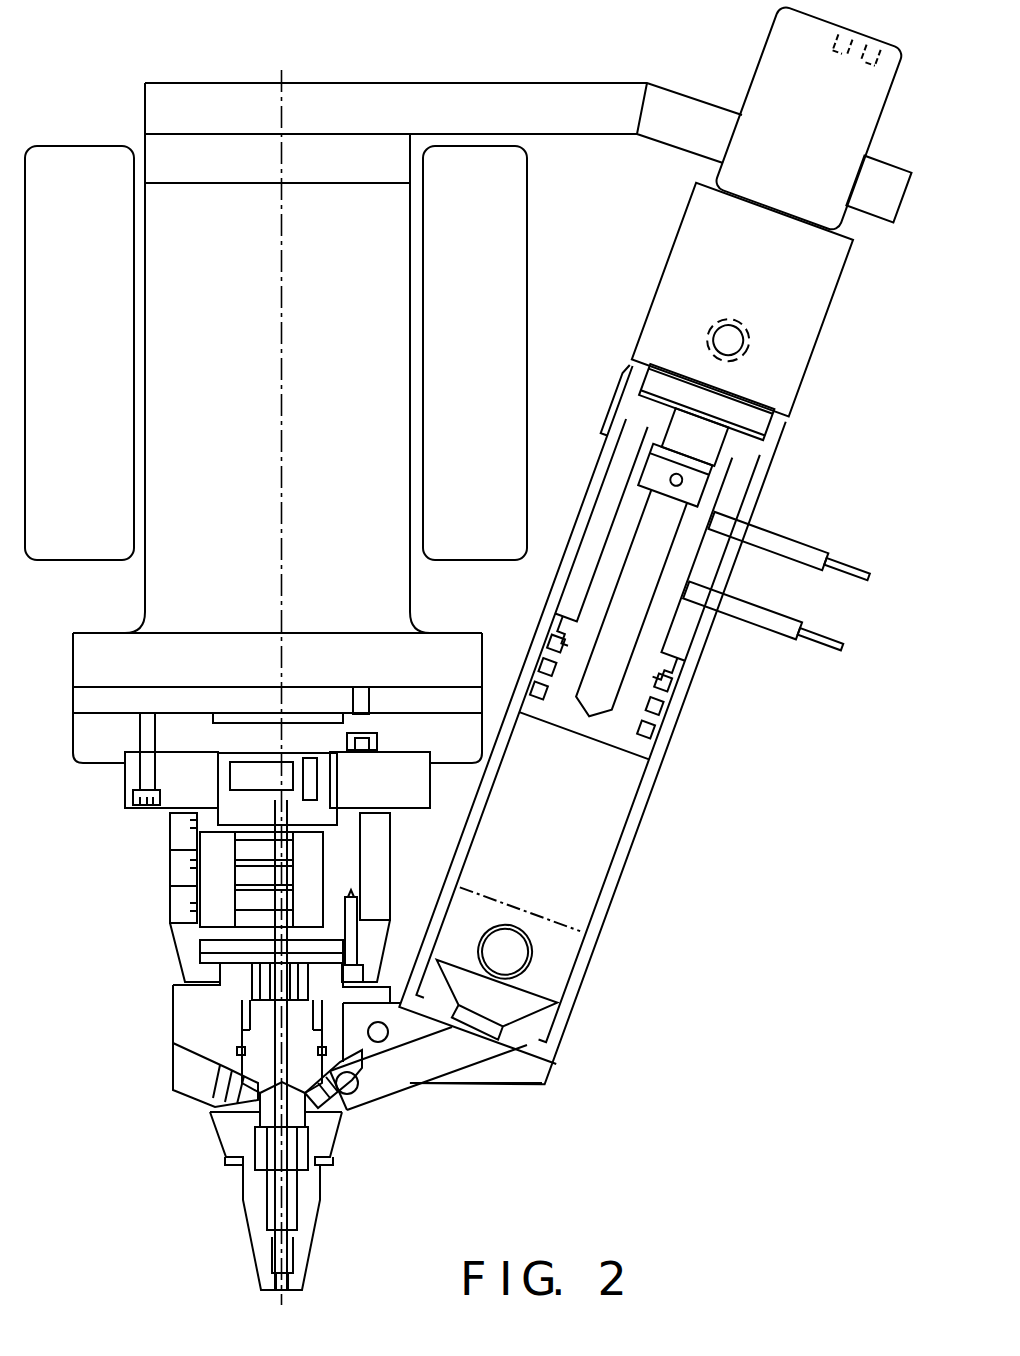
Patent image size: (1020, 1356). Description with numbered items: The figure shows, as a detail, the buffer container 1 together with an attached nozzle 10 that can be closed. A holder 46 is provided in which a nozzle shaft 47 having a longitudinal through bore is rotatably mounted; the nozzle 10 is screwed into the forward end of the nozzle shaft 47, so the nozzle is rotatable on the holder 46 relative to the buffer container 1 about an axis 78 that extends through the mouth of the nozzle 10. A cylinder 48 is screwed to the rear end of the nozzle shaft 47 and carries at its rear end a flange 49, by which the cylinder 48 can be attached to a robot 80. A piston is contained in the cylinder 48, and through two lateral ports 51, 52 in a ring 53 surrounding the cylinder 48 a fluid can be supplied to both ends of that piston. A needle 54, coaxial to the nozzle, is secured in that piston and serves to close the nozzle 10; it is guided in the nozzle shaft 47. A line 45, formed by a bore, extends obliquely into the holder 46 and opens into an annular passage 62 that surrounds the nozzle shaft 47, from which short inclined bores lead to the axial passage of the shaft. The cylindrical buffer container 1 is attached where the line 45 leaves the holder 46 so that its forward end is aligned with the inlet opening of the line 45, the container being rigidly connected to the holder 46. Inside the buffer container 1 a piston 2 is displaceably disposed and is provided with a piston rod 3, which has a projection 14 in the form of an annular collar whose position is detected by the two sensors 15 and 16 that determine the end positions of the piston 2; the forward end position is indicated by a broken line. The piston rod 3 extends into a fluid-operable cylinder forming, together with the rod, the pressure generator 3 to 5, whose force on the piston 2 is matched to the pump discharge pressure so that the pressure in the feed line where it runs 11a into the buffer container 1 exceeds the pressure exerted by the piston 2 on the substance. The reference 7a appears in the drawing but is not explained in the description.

The buffer container 1 is at (605, 885).
The piston 2 is at (638, 708).
The piston rod 3 is at (657, 612).
The pressure generator 5 is at (778, 372).
The holder 7a is at (300, 878).
The nozzle 10 is at (300, 1296).
The feed line inlet 11a is at (525, 945).
The projection 14 is at (715, 492).
The sensor 15 is at (760, 620).
The sensor 16 is at (795, 535).
The line 45 is at (398, 1068).
The holder 46 is at (232, 1137).
The nozzle shaft 47 is at (235, 1005).
The cylinder 48 is at (215, 900).
The flange 49 is at (187, 772).
The lateral port 51 is at (170, 850).
The lateral port 52 is at (172, 896).
The ring 53 is at (178, 866).
The needle 54 is at (283, 1248).
The annular passage 62 is at (245, 1105).
The axis 78 is at (285, 618).
The robot 80 is at (160, 612).